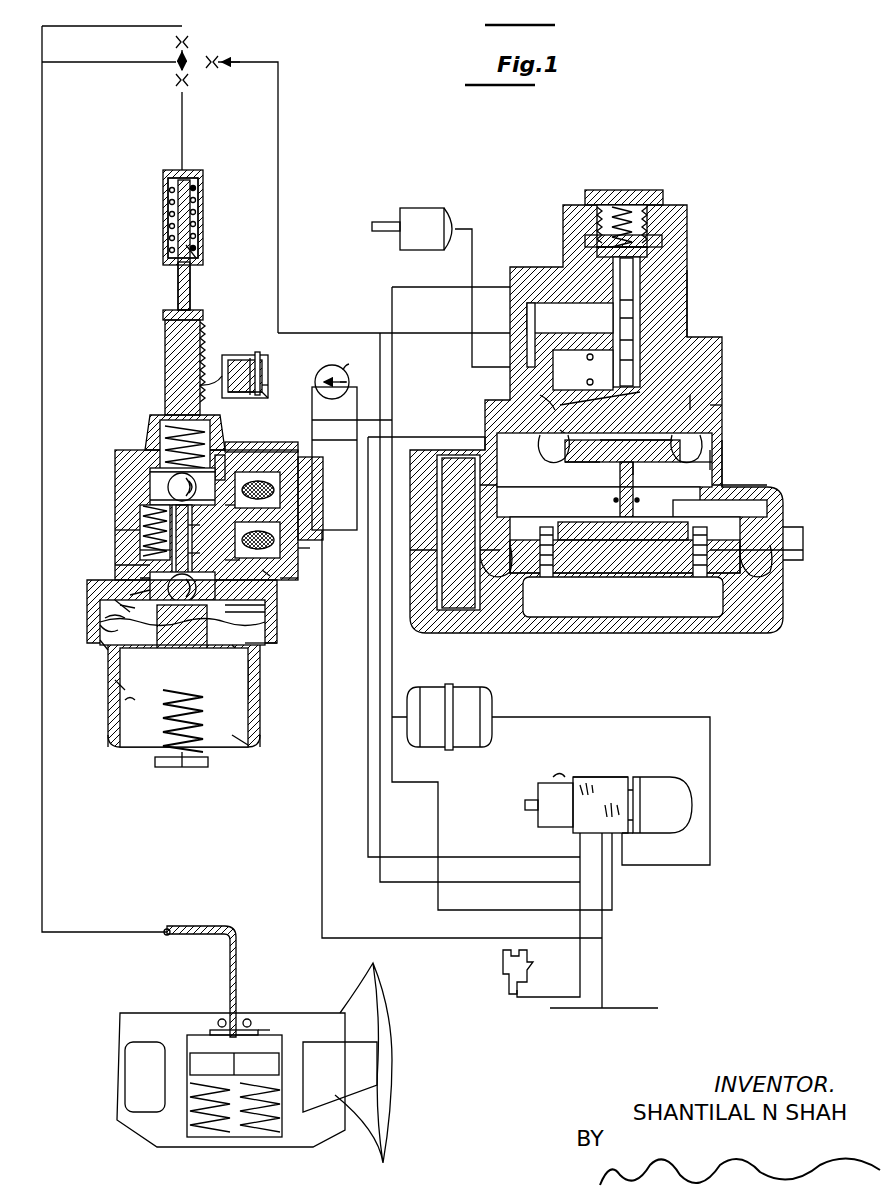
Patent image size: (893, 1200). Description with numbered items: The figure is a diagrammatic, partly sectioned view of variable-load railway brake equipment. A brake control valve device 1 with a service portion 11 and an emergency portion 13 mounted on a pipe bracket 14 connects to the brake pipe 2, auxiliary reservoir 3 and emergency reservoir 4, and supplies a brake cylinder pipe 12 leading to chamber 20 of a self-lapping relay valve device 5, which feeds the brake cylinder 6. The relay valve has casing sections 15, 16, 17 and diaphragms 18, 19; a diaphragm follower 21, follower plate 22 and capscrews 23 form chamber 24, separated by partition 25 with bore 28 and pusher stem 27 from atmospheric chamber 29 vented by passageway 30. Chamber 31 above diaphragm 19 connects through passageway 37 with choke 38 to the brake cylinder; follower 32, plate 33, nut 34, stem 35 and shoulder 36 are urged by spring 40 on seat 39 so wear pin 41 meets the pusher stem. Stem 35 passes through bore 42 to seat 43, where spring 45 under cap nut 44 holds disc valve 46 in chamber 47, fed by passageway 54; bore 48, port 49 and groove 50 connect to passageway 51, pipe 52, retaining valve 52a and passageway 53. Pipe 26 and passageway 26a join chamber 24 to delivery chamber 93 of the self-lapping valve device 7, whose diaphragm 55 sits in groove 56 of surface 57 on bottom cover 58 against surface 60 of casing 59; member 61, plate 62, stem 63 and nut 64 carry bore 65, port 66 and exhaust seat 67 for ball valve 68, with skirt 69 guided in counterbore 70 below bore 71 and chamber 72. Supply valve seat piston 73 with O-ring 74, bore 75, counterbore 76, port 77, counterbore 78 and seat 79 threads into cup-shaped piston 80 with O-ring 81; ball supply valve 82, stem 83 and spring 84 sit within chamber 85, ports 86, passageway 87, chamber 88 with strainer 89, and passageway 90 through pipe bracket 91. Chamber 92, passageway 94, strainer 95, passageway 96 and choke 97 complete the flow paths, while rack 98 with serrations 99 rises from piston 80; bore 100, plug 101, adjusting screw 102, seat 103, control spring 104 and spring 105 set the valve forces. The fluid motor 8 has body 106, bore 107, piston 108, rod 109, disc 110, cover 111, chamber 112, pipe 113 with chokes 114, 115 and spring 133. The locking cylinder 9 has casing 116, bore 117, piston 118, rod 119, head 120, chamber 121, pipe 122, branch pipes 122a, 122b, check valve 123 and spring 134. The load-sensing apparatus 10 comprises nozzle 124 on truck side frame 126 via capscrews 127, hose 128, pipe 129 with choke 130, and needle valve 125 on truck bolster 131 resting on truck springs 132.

The brake control valve device 1 is at (608, 777).
The brake pipe 2 is at (604, 1004).
The auxiliary reservoir 3 is at (434, 696).
The emergency reservoir 4 is at (472, 696).
The self-lapping relay valve device 5 is at (692, 240).
The brake cylinder 6 is at (428, 205).
The self-lapping valve device 7 is at (262, 726).
The fluid motor 8 is at (196, 232).
The locking cylinder 9 is at (246, 352).
The jet-type load-sensing apparatus 10 is at (123, 1000).
The service portion 11 is at (550, 826).
The brake cylinder pipe 12 is at (450, 478).
The emergency portion 13 is at (660, 828).
The pipe bracket 14 is at (626, 782).
The casing section 15 is at (690, 302).
The casing section 16 is at (724, 466).
The casing section 17 is at (785, 585).
The diaphragm 18 is at (755, 552).
The diaphragm 19 is at (712, 458).
The chamber 20 is at (562, 617).
The diaphragm follower 21 is at (510, 552).
The diaphragm follower plate 22 is at (640, 573).
The capscrews 23 is at (548, 580).
The chamber 24 is at (760, 505).
The casing partition 25 is at (530, 497).
The pipe 26 is at (318, 421).
The passageway 26a is at (300, 552).
The pusher stem 27 is at (634, 532).
The bore 28 is at (620, 495).
The atmospheric chamber 29 is at (705, 470).
The passageway 30 is at (542, 458).
The chamber 31 is at (702, 448).
The diaphragm follower 32 is at (700, 435).
The diaphragm follower plate 33 is at (572, 462).
The nut 34 is at (598, 462).
The valve stem 35 is at (700, 402).
The shoulder 36 is at (722, 412).
The passageway 37 is at (550, 408).
The choke 38 is at (583, 370).
The spring seat 39 is at (555, 422).
The spring 40 is at (650, 392).
The wear pin 41 is at (636, 472).
The bore 42 is at (636, 338).
The annular valve seat 43 is at (636, 292).
The cap nut 44 is at (645, 192).
The spring 45 is at (622, 205).
The flat disc-type valve 46 is at (647, 252).
The chamber 47 is at (585, 240).
The bottomed bore 48 is at (636, 312).
The radial port 49 is at (600, 377).
The peripheral annular groove 50 is at (600, 355).
The passageway and pipe 51 is at (506, 334).
The pipe 52 is at (580, 896).
The retaining valve device 52a is at (503, 966).
The passageway 53 is at (570, 335).
The passageway and pipe 54 is at (498, 286).
The diaphragm 55 is at (104, 650).
The annular groove 56 is at (108, 617).
The flat top surface 57 is at (262, 640).
The bottom cover 58 is at (122, 745).
The casing 59 is at (130, 595).
The flat bottom surface 60 is at (102, 630).
The combined diaphragm follower and exhaust valve seat member 61 is at (115, 596).
The annular diaphragm plate 62 is at (250, 650).
The screw-threaded stem 63 is at (118, 682).
The nut 64 is at (258, 680).
The bottomed bore 65 is at (122, 700).
The port 66 is at (207, 658).
The annular exhaust valve seat 67 is at (215, 600).
The ball-type exhaust valve 68 is at (198, 588).
The cylindrical skirt portion 69 is at (155, 592).
The counterbore 70 is at (150, 550).
The bore 71 is at (146, 428).
The chamber 72 is at (262, 622).
The supply valve seat piston member 73 is at (138, 540).
The O-ring 74 is at (140, 520).
The bore 75 is at (192, 555).
The counterbore 76 is at (150, 578).
The port 77 is at (192, 528).
The second counterbore 78 is at (168, 490).
The annular supply valve seat 79 is at (150, 500).
The cup-shaped piston member 80 is at (150, 466).
The O-ring 81 is at (125, 455).
The ball-type supply valve 82 is at (222, 452).
The stem 83 is at (190, 510).
The spring 84 is at (190, 424).
The annular chamber 85 is at (222, 472).
The ports 86 is at (160, 482).
The passageway 87 is at (236, 514).
The chamber 88 is at (256, 470).
The strainer device 89 is at (258, 480).
The passageway and pipe 90 is at (300, 497).
The pipe bracket 91 is at (282, 580).
The chamber 92 is at (140, 565).
The delivery chamber 93 is at (260, 586).
The passageway 94 is at (232, 572).
The strainer device 95 is at (258, 532).
The passageway 96 is at (262, 598).
The choke 97 is at (262, 610).
The rack member 98 is at (165, 358).
The serrations 99 is at (205, 355).
The bore 100 is at (205, 752).
The flanged plug 101 is at (155, 762).
The adjusting screw 102 is at (183, 767).
The cup-shaped spring seat 103 is at (240, 742).
The control spring 104 is at (240, 705).
The spring 105 is at (120, 606).
The cup-shaped body 106 is at (198, 252).
The bore 107 is at (178, 275).
The piston 108 is at (196, 190).
The piston rod 109 is at (196, 222).
The disc 110 is at (163, 316).
The cover member 111 is at (196, 172).
The chamber 112 is at (170, 185).
The passageway and pipe 113 is at (182, 168).
The choke 114 is at (188, 80).
The choke 115 is at (214, 56).
The cup-shaped casing 116 is at (240, 394).
The bore 117 is at (235, 362).
The piston 118 is at (261, 370).
The piston rod 119 is at (200, 385).
The pressure head 120 is at (266, 396).
The pressure chamber 121 is at (268, 386).
The passageway and pipe 122 is at (328, 366).
The branch pipe 122a is at (342, 368).
The branch pipe 122b is at (333, 455).
The spring-loaded check valve 123 is at (348, 382).
The nozzle 124 is at (258, 1032).
The needle valve 125 is at (214, 1031).
The truck side frame 126 is at (338, 1016).
The capscrews 127 is at (220, 1018).
The flexible hose 128 is at (238, 982).
The pipe 129 is at (42, 62).
The choke 130 is at (188, 40).
The truck bolster 131 is at (232, 1068).
The truck springs 132 is at (230, 1120).
The spring 133 is at (169, 240).
The spring 134 is at (252, 360).